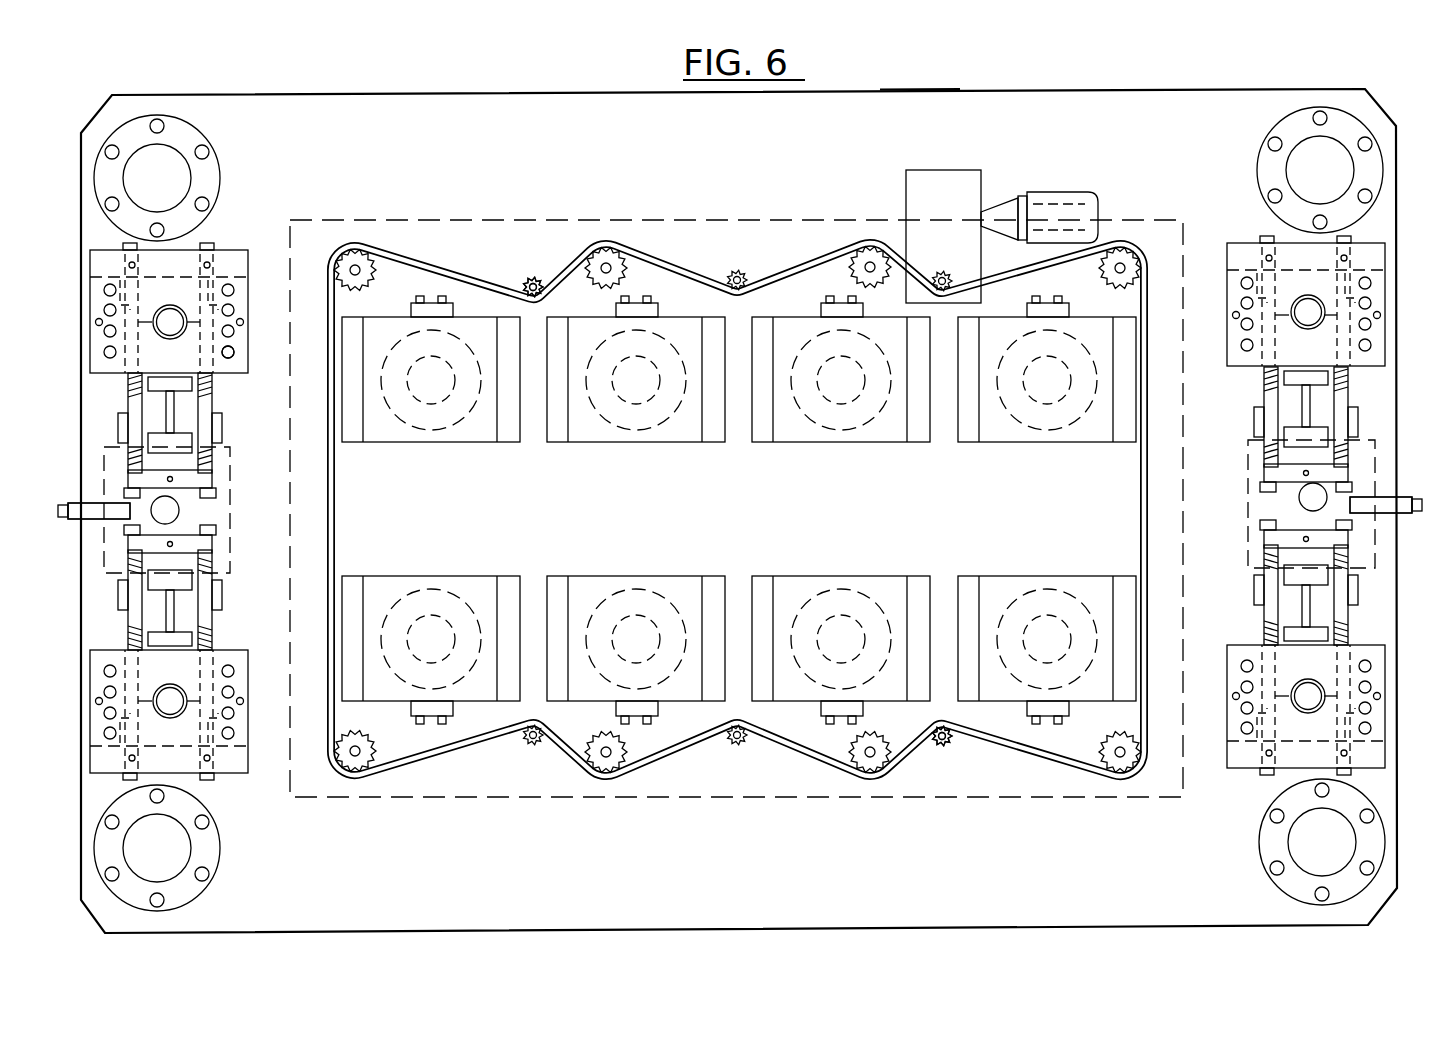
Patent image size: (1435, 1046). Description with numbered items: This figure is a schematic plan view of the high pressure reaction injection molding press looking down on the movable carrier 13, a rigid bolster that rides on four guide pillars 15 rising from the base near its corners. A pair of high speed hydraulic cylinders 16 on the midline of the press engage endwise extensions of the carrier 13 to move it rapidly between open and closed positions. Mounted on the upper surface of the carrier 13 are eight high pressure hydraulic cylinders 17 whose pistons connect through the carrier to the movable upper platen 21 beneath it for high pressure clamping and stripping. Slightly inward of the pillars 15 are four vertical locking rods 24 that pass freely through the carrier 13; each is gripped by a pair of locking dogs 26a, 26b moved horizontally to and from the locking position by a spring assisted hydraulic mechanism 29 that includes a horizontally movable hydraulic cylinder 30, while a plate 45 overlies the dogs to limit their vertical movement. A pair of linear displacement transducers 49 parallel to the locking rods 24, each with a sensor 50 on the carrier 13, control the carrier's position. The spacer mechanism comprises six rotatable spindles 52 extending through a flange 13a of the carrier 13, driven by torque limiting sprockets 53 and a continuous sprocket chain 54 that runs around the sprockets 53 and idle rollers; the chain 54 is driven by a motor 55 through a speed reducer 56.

The movable carrier 13 is at (597, 882).
The flange of the carrier 13a is at (912, 110).
The guide pillars 15 is at (168, 165).
The hydraulic cylinders 16 is at (233, 510).
The high pressure hydraulic cylinders 17 is at (450, 442).
The movable upper platen 21 is at (355, 222).
The locking rods 24 is at (172, 300).
The locking dog 26a is at (232, 358).
The locking dog 26b is at (243, 251).
The spring assisted hydraulic mechanism 29 is at (250, 757).
The horizontally movable hydraulic cylinder 30 is at (1300, 557).
The plate 45 is at (1247, 650).
The linear displacement transducers 49 is at (62, 503).
The sensor 50 is at (62, 521).
The rotatable spindles 52 is at (536, 282).
The torque limiting sprockets 53 is at (532, 279).
The sprocket chain 54 is at (437, 265).
The motor 55 is at (1062, 196).
The speed reducer 56 is at (938, 183).